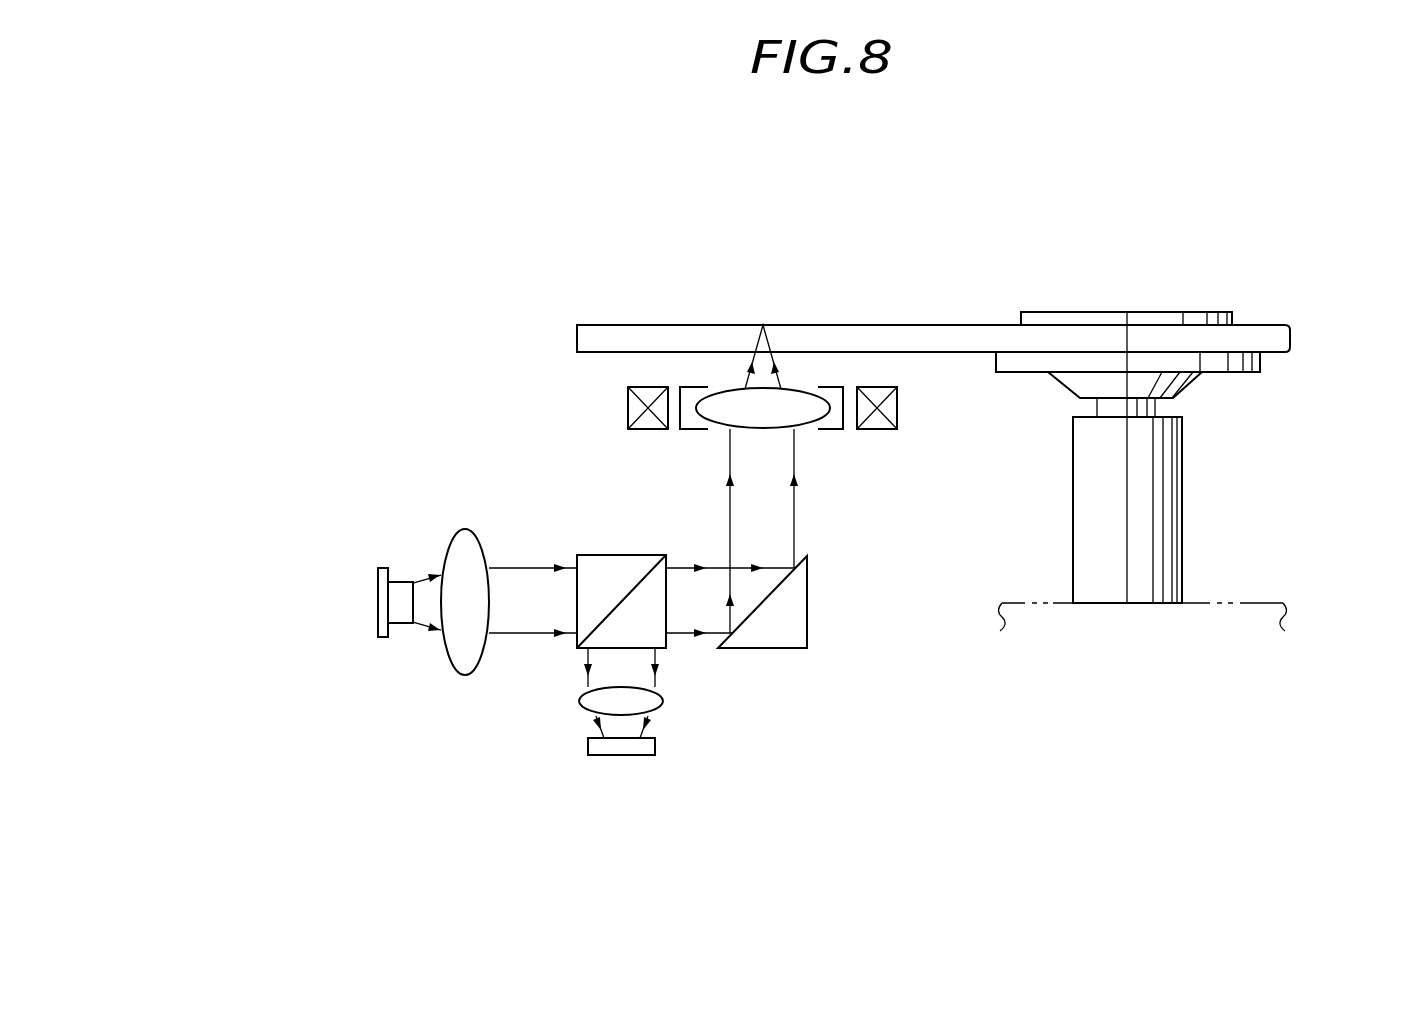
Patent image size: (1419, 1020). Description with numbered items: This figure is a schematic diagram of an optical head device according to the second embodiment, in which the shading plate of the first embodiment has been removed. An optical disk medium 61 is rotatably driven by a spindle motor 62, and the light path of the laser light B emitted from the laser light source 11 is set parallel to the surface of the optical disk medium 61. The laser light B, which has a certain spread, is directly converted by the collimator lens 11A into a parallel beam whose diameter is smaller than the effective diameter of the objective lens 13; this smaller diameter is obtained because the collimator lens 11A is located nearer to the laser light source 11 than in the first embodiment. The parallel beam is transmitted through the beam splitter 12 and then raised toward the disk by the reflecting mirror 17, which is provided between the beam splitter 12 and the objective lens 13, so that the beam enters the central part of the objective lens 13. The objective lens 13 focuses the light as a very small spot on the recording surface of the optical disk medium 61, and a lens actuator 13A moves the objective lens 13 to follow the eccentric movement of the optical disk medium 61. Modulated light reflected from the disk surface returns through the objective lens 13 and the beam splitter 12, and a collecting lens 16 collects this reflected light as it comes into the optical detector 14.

The optical disk medium 61 is at (628, 325).
The spindle motor 62 is at (1183, 530).
The objective lens 13 is at (798, 397).
The lens actuator 13A is at (872, 470).
The laser light source 11 is at (377, 607).
The collimator lens 11A is at (453, 548).
The laser light B is at (422, 623).
The beam splitter 12 is at (600, 557).
The reflecting mirror 17 is at (807, 620).
The collecting lens 16 is at (665, 700).
The optical detector 14 is at (613, 752).